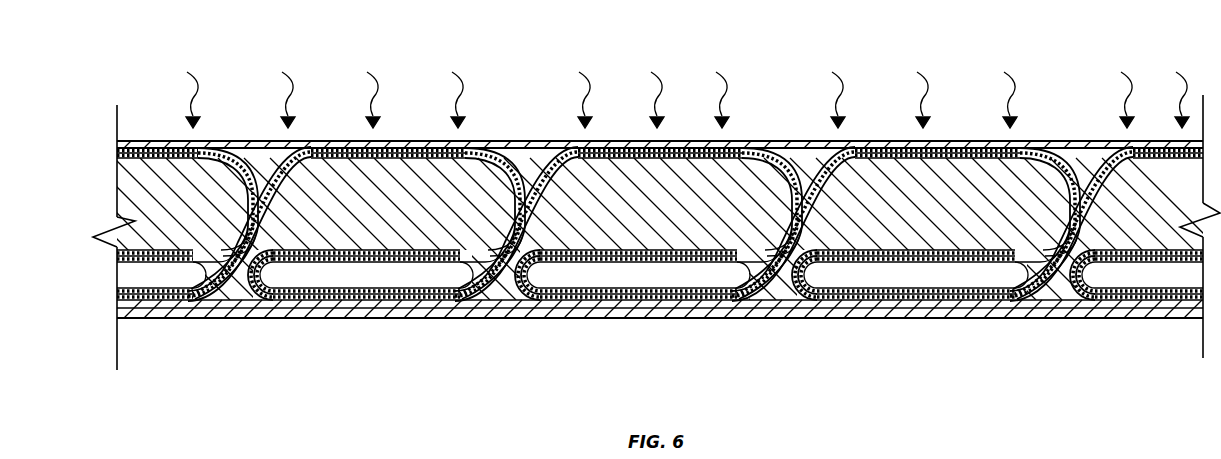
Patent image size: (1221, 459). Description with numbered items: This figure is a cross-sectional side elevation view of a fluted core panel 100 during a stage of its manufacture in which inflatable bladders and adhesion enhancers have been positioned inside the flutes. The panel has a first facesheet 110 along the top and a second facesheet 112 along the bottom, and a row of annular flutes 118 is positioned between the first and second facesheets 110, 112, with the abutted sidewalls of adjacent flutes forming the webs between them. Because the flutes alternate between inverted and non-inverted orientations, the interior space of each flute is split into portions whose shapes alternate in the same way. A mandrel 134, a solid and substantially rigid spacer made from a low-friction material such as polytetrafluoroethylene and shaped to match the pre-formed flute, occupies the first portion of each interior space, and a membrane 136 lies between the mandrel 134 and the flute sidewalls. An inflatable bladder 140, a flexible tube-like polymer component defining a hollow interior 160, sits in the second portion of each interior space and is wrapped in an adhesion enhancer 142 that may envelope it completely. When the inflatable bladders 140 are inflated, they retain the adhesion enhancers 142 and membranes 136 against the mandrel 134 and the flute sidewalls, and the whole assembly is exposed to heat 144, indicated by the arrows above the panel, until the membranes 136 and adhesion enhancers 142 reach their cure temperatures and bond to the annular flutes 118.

The fluted core panel 100 is at (218, 365).
The first facesheet 110 is at (157, 140).
The second facesheet 112 is at (298, 320).
The annular flute 118 is at (328, 318).
The mandrel 134 is at (315, 185).
The membrane 136 is at (398, 160).
The inflatable bladder 140 is at (453, 297).
The adhesion enhancer 142 is at (412, 290).
The heat 144 is at (155, 88).
The hollow interior 160 is at (378, 277).